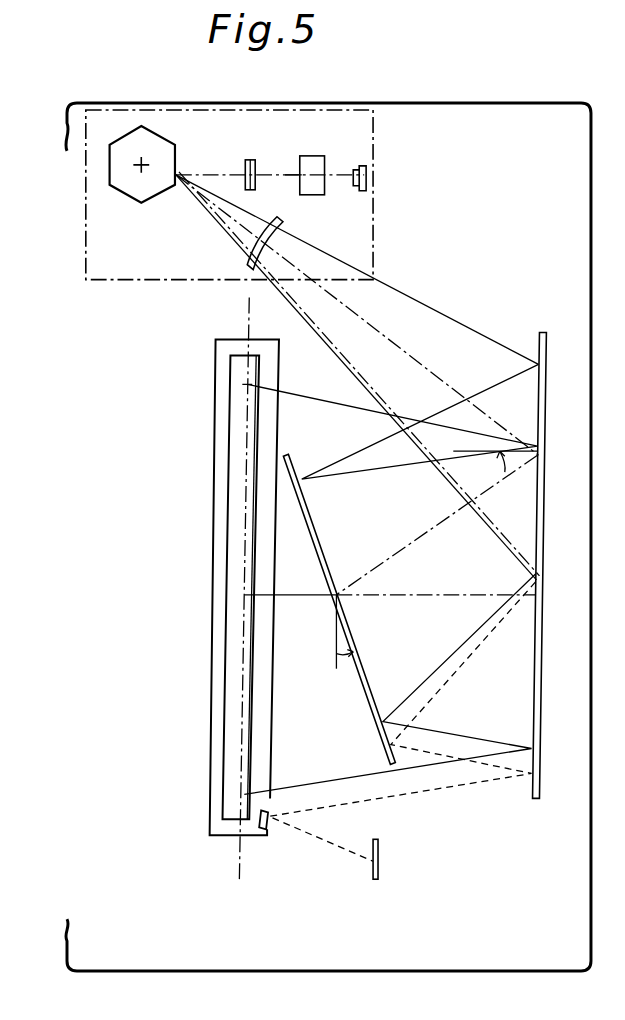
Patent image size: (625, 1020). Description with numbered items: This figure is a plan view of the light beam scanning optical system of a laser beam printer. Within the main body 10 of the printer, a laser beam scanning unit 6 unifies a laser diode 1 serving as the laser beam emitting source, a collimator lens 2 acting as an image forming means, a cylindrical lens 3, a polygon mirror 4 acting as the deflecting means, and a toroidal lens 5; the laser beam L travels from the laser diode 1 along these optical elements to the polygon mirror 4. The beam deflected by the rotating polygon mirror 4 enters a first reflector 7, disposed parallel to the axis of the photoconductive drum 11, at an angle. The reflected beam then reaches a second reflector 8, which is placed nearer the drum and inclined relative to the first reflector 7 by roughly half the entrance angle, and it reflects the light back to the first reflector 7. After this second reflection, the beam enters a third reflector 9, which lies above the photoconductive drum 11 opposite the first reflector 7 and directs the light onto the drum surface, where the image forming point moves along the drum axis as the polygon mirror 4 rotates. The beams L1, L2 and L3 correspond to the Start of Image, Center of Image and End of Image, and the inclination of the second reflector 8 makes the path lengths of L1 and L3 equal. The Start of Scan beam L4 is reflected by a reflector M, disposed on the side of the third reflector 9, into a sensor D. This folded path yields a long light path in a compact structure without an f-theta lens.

The laser diode 1 is at (353, 166).
The collimator lens 2 is at (306, 153).
The cylindrical lens 3 is at (250, 156).
The polygon mirror 4 is at (108, 157).
The toroidal lens 5 is at (245, 262).
The laser beam scanning unit 6 is at (82, 197).
The first reflector 7 is at (540, 798).
The second reflector 8 is at (389, 763).
The third reflector 9 is at (230, 650).
The main body 10 is at (425, 98).
The photoconductive drum 11 is at (207, 815).
The laser beam L is at (283, 170).
The SOI laser beam L1 is at (355, 367).
The COI laser beam L2 is at (417, 357).
The EOI laser beam L3 is at (481, 331).
The SOS laser beam L4 is at (273, 291).
The reflector M is at (262, 830).
The sensor D is at (372, 872).